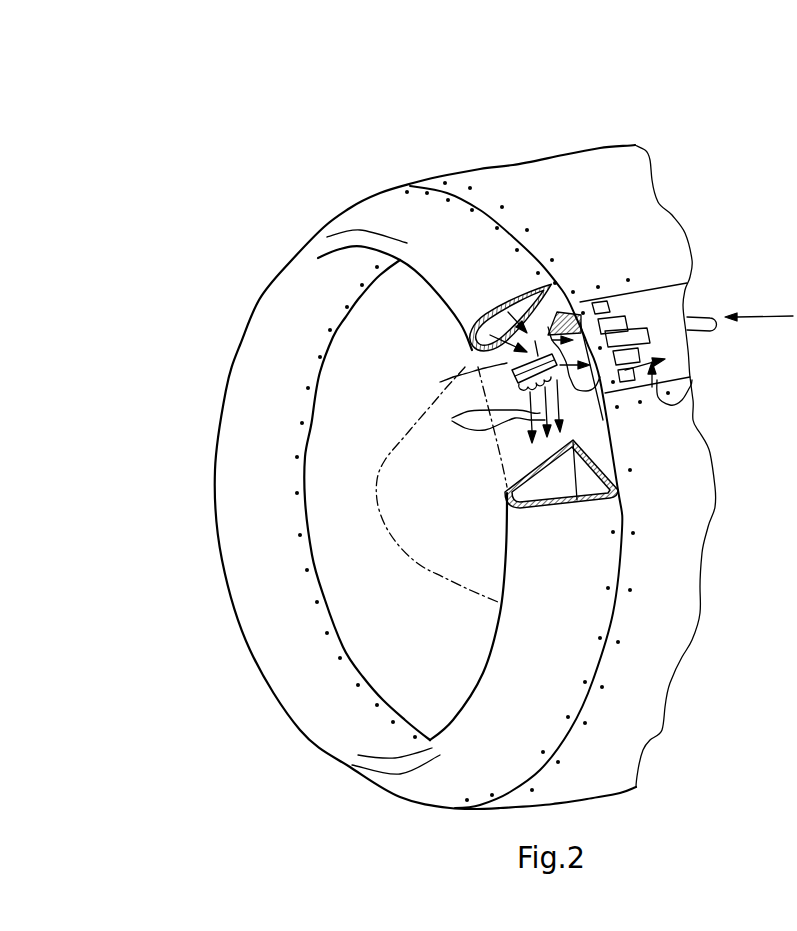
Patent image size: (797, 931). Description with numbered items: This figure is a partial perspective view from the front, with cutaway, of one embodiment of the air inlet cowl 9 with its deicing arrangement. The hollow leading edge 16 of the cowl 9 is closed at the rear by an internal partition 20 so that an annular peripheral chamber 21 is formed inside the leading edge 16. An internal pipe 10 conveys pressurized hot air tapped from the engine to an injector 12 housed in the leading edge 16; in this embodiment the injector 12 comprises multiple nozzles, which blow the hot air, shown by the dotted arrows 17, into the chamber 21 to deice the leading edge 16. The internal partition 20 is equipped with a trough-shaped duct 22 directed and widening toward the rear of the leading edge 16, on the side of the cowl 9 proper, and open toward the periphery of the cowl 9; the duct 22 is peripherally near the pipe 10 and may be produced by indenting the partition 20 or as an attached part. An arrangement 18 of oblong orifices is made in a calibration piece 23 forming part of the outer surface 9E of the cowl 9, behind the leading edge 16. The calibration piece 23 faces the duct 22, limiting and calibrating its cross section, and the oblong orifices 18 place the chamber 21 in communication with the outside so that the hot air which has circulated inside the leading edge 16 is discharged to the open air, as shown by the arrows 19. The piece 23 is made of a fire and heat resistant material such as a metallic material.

The air inlet cowl 9 is at (465, 176).
The outer surface 9E is at (548, 170).
The internal pipe 10 is at (693, 313).
The injector 12 is at (476, 358).
The hollow leading edge 16 is at (262, 342).
The dotted arrows 17 is at (452, 419).
The arrangement of oblong orifices 18 is at (607, 291).
The arrows 19 is at (692, 397).
The internal partition 20 is at (603, 457).
The annular peripheral chamber 21 is at (566, 503).
The trough-shaped duct 22 is at (592, 385).
The calibration piece 23 is at (658, 300).